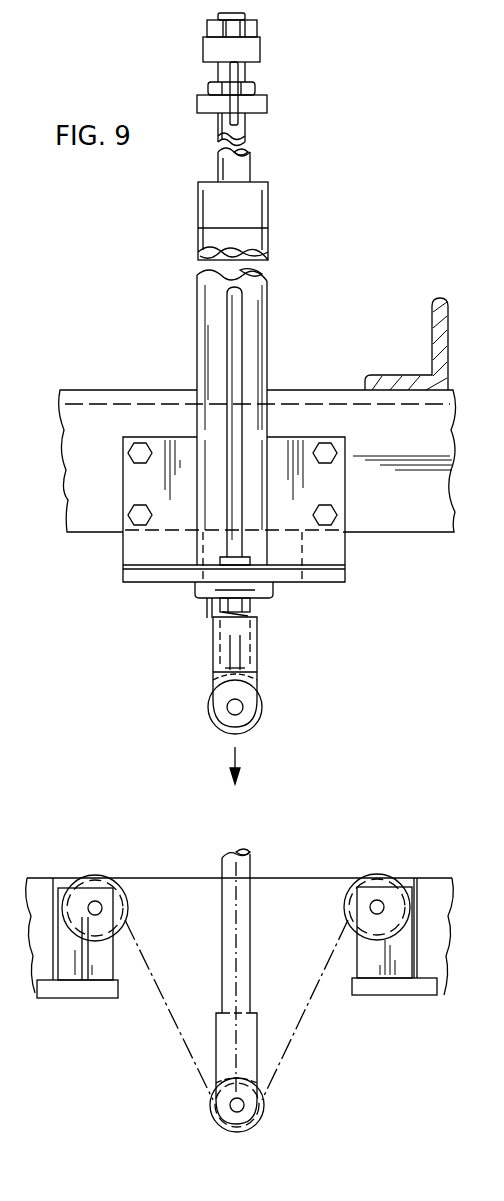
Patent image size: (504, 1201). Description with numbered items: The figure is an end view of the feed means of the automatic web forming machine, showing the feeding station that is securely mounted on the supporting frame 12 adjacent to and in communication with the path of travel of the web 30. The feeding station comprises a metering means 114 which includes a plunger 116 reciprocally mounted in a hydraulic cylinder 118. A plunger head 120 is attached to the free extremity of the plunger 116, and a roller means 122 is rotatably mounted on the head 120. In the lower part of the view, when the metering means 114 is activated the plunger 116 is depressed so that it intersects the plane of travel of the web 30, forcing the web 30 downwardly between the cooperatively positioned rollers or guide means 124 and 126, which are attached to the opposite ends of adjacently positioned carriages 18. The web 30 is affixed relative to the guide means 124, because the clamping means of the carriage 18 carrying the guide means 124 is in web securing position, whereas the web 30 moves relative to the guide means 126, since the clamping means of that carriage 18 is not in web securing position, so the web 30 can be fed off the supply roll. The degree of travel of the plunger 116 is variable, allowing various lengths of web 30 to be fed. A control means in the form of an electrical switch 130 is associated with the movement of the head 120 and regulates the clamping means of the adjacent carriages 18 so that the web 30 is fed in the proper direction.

The supporting frame 12 is at (147, 398).
The carriage 18 is at (73, 1002).
The web 30 is at (307, 878).
The metering means 114 is at (280, 273).
The plunger 116 is at (250, 608).
The hydraulic cylinder 118 is at (267, 353).
The plunger head 120 is at (257, 644).
The pulley 122 is at (262, 708).
The guide means 124 is at (92, 873).
The guide means 126 is at (380, 872).
The electrical switch 130 is at (297, 587).